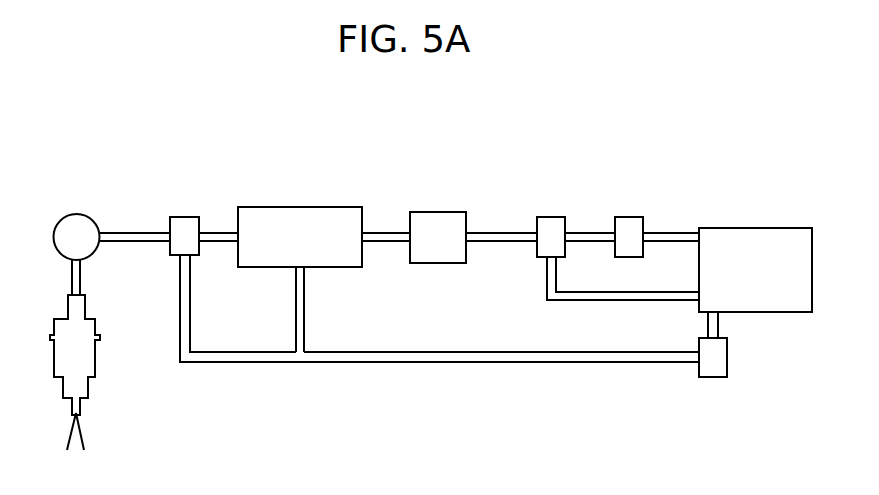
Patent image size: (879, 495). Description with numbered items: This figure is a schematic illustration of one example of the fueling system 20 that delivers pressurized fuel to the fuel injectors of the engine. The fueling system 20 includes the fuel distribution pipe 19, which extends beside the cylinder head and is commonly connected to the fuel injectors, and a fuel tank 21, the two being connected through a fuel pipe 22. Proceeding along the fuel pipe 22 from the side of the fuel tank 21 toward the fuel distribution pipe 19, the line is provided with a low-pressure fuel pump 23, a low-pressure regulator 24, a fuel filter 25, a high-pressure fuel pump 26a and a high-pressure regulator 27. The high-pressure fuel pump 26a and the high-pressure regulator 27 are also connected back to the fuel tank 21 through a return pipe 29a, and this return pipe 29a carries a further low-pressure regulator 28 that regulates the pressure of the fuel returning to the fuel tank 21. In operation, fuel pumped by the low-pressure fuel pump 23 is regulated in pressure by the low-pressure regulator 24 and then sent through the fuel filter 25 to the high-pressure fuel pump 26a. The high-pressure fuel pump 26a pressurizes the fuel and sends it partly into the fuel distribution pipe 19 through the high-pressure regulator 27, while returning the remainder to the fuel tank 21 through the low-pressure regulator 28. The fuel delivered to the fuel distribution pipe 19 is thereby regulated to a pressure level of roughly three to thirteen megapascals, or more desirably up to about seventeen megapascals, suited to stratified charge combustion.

The fuel distribution pipe 19 is at (63, 218).
The fueling system 20 is at (578, 158).
The fuel tank 21 is at (702, 227).
The fuel pipe 22 is at (382, 243).
The low-pressure fuel pump 23 is at (625, 217).
The low-pressure regulator 24 is at (542, 217).
The fuel filter 25 is at (417, 212).
The high-pressure fuel pump 26a is at (264, 207).
The high-pressure regulator 27 is at (176, 217).
The low-pressure regulator 28 is at (697, 342).
The return pipe 29a is at (430, 353).